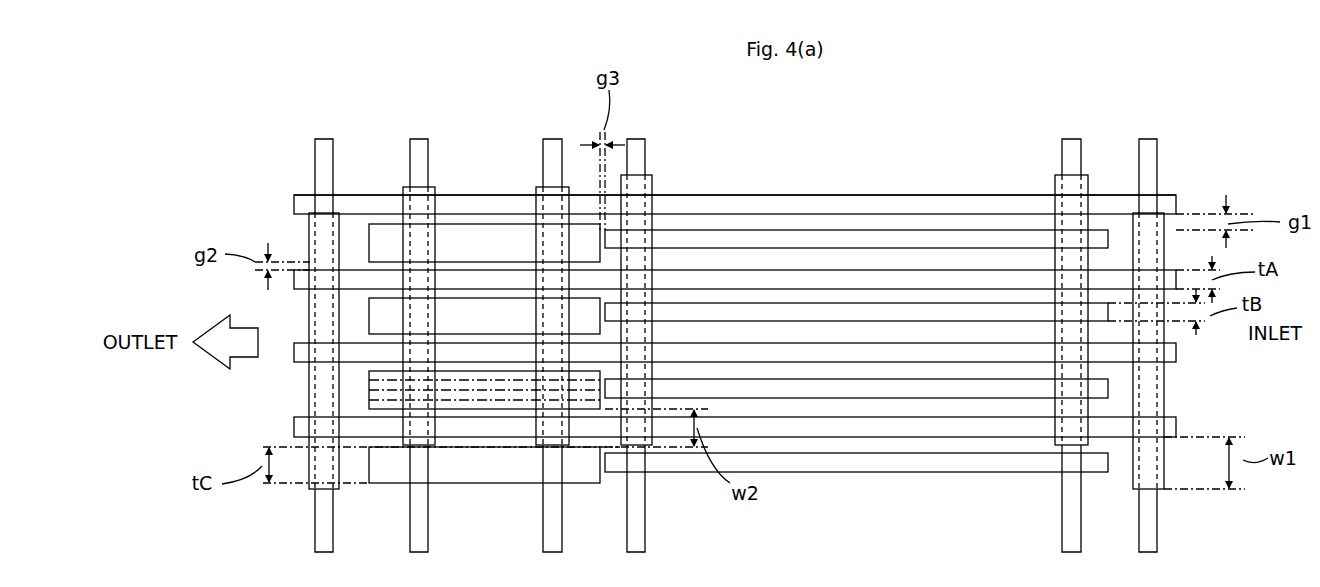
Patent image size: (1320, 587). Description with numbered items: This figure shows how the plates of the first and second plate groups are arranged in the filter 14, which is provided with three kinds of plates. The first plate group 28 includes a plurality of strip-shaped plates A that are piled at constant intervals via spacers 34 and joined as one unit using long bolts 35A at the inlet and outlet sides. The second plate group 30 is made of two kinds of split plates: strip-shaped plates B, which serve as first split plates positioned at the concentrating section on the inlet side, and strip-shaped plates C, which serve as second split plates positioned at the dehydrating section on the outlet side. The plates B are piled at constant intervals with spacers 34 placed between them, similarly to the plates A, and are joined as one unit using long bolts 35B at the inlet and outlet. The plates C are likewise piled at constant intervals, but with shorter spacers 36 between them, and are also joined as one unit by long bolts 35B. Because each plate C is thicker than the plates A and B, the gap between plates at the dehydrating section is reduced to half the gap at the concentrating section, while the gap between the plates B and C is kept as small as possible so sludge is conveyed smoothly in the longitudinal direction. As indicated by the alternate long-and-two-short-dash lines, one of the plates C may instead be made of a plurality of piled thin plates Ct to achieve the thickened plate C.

The filter 14 is at (933, 138).
The first plate group 28 is at (976, 191).
The second plate group 30 is at (896, 474).
The spacer 34 is at (652, 262).
The long bolt 35A is at (315, 527).
The long bolt 35B is at (410, 535).
The spacer 36 is at (437, 445).
The strip-shaped plate A is at (1130, 283).
The strip-shaped plate B is at (832, 305).
The strip-shaped plate C is at (481, 298).
The thin plate Ct is at (575, 442).